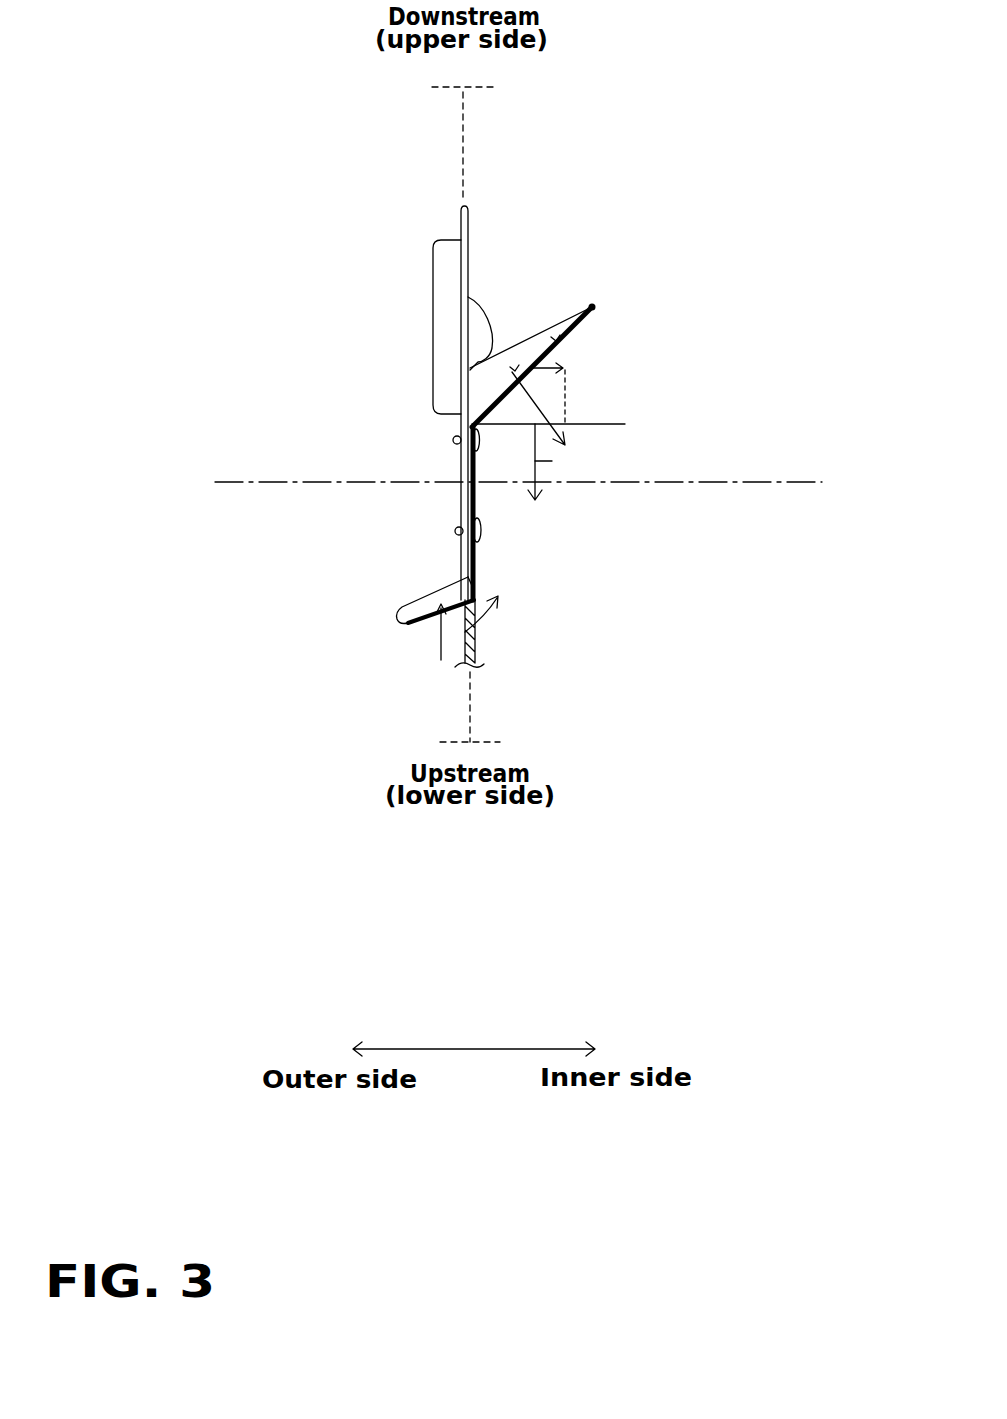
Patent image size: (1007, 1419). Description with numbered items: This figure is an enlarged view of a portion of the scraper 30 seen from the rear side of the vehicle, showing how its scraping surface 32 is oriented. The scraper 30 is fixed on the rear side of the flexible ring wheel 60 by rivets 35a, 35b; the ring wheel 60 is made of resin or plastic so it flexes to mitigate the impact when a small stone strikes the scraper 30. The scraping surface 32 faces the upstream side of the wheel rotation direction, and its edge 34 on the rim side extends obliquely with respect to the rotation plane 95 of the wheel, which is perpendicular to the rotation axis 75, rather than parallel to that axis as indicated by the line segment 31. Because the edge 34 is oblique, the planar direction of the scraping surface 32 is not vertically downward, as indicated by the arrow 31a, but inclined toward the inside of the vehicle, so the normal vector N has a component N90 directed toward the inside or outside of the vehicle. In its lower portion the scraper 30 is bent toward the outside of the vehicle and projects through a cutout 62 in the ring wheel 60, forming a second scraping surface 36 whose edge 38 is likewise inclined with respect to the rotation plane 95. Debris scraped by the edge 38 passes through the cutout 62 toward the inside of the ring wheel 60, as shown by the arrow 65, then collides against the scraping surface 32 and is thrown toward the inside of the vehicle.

The scraper 30 is at (539, 320).
The line segment 31 is at (607, 425).
The arrow 31a is at (552, 461).
The scraping surface 32 is at (566, 350).
The edge 34 is at (592, 318).
The rivet 35a is at (452, 440).
The rivet 35b is at (455, 531).
The scraping surface 36 is at (441, 658).
The edge 38 is at (428, 626).
The ring wheel 60 is at (467, 497).
The cutout 62 is at (476, 632).
The arrow 65 is at (465, 632).
The rotation axis 75 is at (788, 480).
The rotation plane 95 is at (468, 160).
The normal vector N is at (548, 412).
The component N90 is at (562, 368).